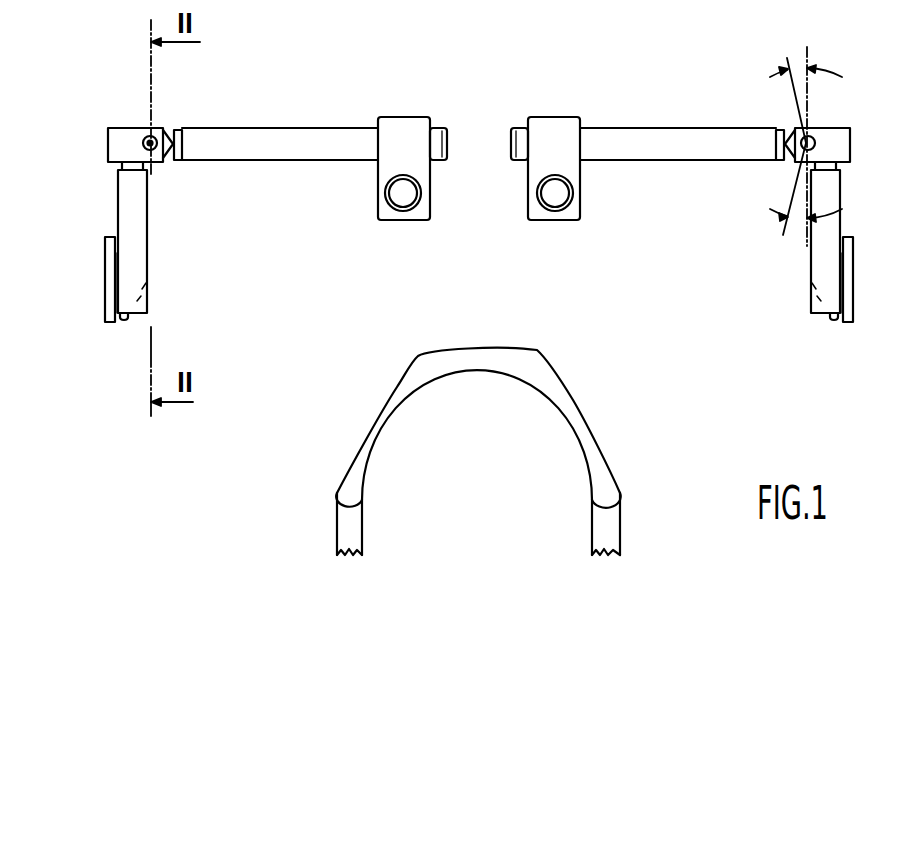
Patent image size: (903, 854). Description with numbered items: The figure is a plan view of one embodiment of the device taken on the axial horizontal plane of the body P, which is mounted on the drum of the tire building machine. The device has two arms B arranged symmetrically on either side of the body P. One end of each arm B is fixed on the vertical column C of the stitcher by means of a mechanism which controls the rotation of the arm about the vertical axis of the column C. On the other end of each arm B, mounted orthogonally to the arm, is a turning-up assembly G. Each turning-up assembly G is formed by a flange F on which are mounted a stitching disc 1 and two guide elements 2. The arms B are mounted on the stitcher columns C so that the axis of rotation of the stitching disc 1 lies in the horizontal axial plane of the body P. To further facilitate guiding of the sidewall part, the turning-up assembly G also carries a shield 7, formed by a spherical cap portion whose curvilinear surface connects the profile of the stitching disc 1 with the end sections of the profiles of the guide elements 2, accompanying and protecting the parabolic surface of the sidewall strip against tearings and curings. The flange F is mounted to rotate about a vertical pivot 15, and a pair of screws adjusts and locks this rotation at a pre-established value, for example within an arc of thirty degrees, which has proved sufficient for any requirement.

The flange F is at (140, 132).
The vertical pivot 15 is at (143, 150).
The arm B is at (322, 140).
The vertical column C is at (400, 197).
The guide element 2 is at (132, 195).
The stitching disc 1 is at (112, 263).
The shield 7 is at (122, 318).
The turning-up assembly G is at (160, 271).
The body P is at (463, 358).